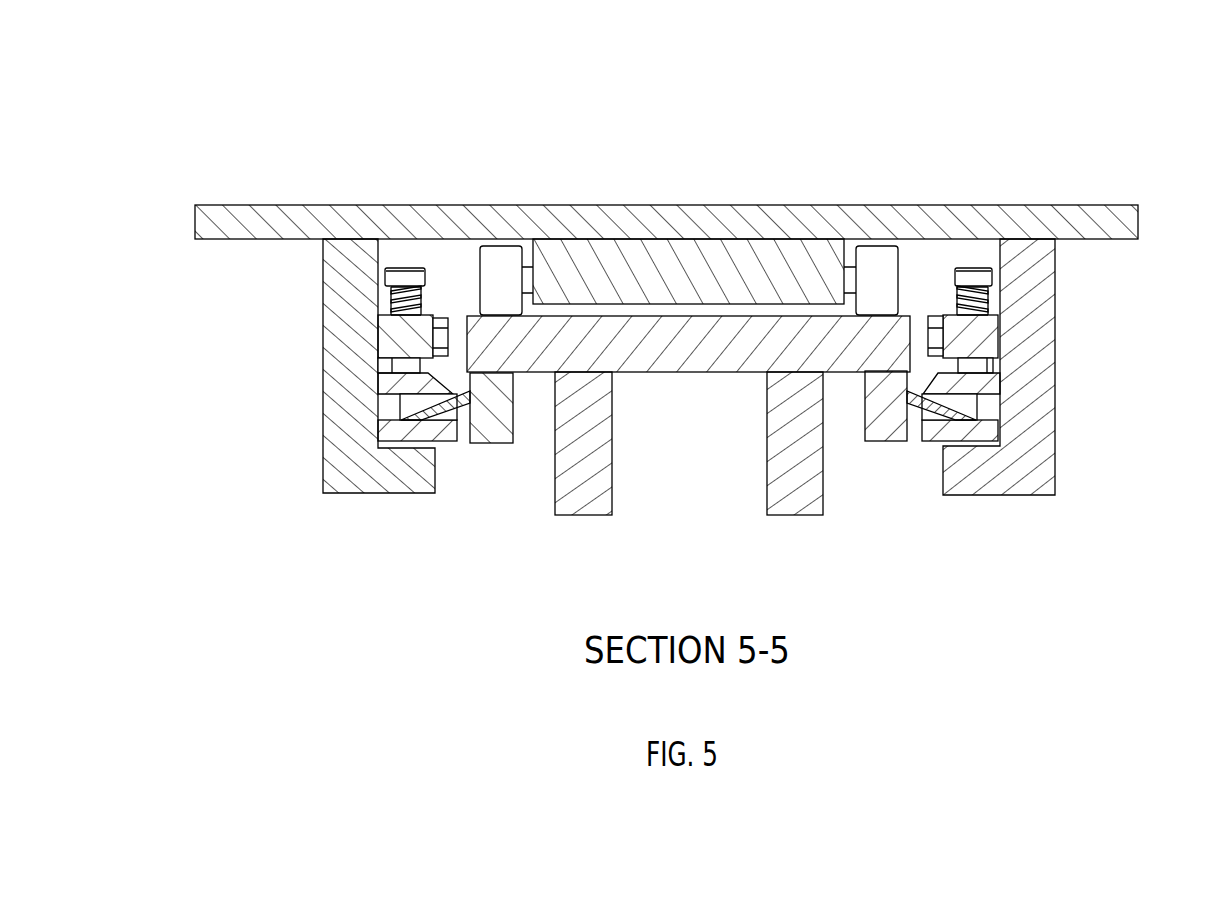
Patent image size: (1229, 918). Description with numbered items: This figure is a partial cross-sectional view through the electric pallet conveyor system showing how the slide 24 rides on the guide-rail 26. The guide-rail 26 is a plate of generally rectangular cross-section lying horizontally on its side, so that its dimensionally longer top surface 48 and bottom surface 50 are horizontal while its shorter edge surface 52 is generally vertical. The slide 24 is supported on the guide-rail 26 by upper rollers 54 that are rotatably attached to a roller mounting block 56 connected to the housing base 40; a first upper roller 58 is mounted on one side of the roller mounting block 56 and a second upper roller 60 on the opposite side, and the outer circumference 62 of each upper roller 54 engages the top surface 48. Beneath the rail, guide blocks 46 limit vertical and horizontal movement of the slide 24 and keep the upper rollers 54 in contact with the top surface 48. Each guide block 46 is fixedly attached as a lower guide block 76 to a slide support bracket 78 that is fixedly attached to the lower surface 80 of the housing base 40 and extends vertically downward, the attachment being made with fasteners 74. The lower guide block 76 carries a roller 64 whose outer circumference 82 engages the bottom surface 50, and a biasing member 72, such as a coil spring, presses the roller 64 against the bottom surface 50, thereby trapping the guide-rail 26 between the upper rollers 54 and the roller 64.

The slide 24 is at (676, 199).
The guide-rail 26 is at (590, 315).
The housing base 40 is at (1138, 220).
The guide block 46 is at (450, 442).
The top surface 48 is at (690, 316).
The bottom surface 50 is at (695, 372).
The edge surface 52 is at (465, 355).
The upper roller 54 is at (502, 246).
The roller mounting block 56 is at (643, 304).
The first upper roller 58 is at (480, 246).
The second upper roller 60 is at (898, 263).
The outer circumference 62 is at (519, 246).
The roller 64 is at (497, 443).
The biasing member 72 is at (393, 287).
The fastener 74 is at (443, 313).
The lower guide block 76 is at (393, 442).
The slide support bracket 78 is at (323, 273).
The lower surface 80 is at (228, 238).
The outer circumference 82 is at (482, 442).